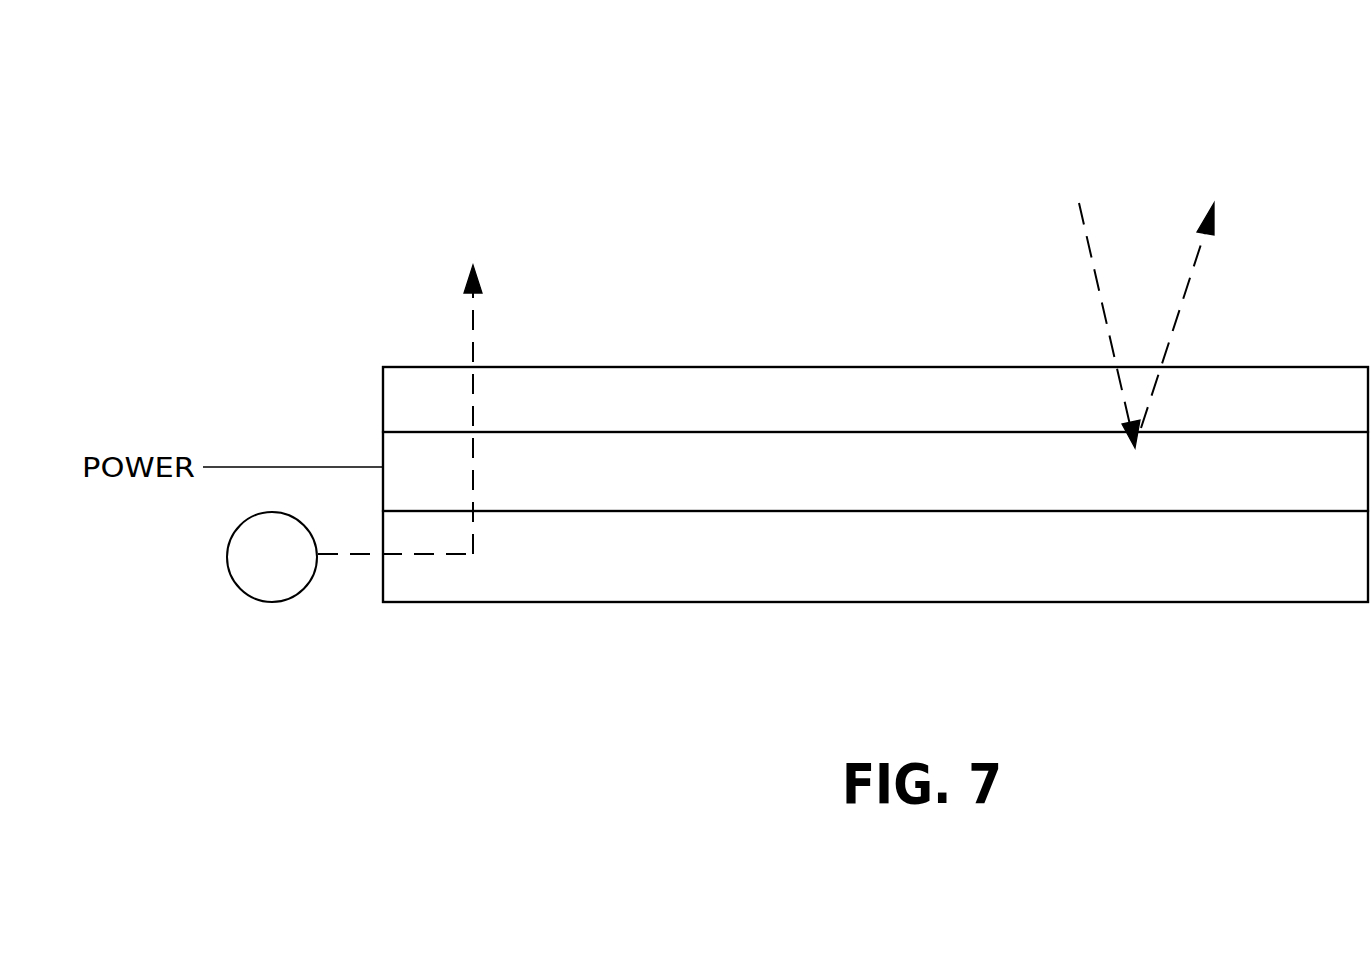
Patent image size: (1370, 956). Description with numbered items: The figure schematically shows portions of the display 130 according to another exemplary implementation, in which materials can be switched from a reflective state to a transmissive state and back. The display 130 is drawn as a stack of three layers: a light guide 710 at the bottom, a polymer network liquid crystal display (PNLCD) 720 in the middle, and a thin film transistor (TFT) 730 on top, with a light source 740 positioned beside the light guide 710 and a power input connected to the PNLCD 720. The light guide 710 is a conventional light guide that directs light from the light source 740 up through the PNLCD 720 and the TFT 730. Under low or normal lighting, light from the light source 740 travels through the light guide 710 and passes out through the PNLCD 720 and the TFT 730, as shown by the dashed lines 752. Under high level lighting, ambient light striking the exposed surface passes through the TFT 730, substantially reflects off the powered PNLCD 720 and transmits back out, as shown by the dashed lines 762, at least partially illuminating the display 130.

The display 130 is at (440, 95).
The light guide 710 is at (875, 556).
The polymer network liquid crystal display (PNLCD) 720 is at (875, 471).
The thin film transistor (TFT) 730 is at (875, 399).
The light source 740 is at (262, 575).
The dashed lines 752 is at (474, 356).
The dashed lines 762 is at (1192, 260).